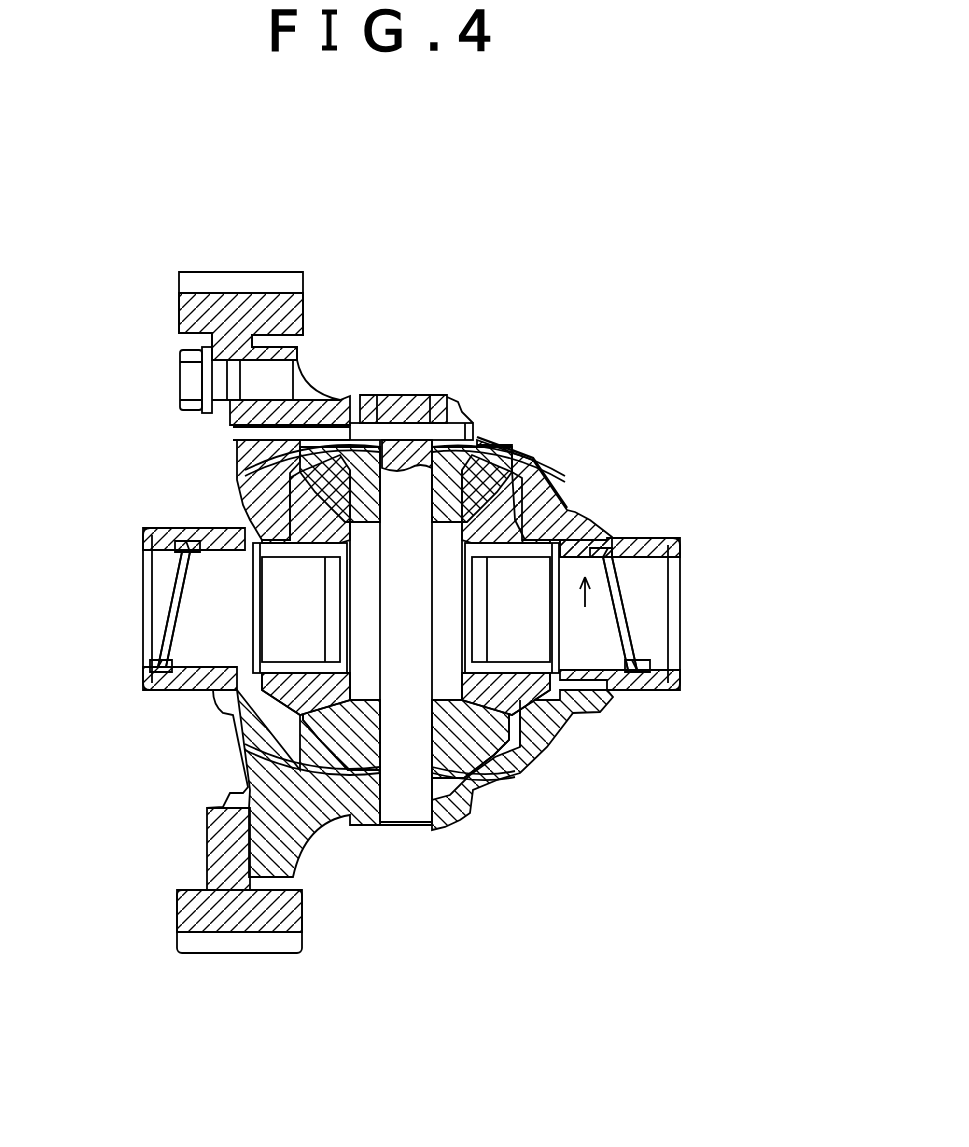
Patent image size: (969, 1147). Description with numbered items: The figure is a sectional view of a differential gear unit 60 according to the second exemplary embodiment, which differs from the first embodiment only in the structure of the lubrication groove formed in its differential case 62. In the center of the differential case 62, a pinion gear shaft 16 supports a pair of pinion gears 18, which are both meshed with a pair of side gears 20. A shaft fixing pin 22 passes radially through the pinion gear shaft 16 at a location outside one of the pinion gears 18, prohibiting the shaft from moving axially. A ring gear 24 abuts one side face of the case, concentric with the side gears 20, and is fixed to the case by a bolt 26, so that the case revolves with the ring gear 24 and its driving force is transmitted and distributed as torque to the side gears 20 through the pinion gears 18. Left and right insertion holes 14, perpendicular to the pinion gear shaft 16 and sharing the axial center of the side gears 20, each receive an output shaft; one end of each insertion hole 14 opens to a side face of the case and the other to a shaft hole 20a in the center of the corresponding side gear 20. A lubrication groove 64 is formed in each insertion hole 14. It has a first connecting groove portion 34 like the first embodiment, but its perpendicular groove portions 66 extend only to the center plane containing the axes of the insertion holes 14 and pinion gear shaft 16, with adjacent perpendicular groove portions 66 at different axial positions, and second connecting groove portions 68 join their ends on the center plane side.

The insertion hole 14 is at (122, 581).
The pinion gear shaft 16 is at (400, 805).
The pinion gear 18 is at (468, 462).
The side gear 20 is at (268, 700).
The shaft hole 20a is at (248, 648).
The shaft fixing pin 22 is at (365, 426).
The ring gear 24 is at (272, 303).
The bolt 26 is at (185, 378).
The first connecting groove portion 34 is at (157, 606).
The differential gear unit 60 is at (550, 267).
The differential case 62 is at (545, 410).
The lubrication groove 64 is at (144, 615).
The perpendicular groove portion 66 is at (178, 562).
The second connecting groove portion 68 is at (192, 547).